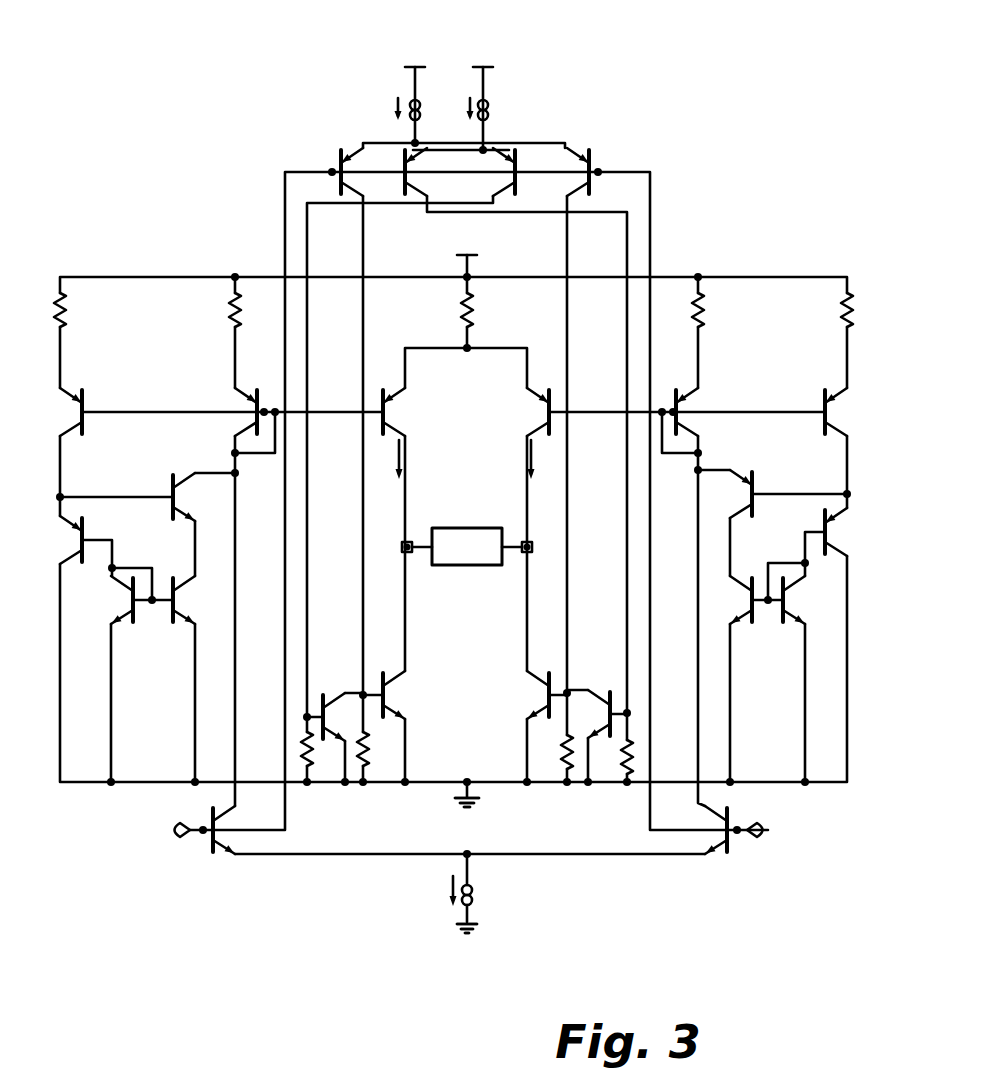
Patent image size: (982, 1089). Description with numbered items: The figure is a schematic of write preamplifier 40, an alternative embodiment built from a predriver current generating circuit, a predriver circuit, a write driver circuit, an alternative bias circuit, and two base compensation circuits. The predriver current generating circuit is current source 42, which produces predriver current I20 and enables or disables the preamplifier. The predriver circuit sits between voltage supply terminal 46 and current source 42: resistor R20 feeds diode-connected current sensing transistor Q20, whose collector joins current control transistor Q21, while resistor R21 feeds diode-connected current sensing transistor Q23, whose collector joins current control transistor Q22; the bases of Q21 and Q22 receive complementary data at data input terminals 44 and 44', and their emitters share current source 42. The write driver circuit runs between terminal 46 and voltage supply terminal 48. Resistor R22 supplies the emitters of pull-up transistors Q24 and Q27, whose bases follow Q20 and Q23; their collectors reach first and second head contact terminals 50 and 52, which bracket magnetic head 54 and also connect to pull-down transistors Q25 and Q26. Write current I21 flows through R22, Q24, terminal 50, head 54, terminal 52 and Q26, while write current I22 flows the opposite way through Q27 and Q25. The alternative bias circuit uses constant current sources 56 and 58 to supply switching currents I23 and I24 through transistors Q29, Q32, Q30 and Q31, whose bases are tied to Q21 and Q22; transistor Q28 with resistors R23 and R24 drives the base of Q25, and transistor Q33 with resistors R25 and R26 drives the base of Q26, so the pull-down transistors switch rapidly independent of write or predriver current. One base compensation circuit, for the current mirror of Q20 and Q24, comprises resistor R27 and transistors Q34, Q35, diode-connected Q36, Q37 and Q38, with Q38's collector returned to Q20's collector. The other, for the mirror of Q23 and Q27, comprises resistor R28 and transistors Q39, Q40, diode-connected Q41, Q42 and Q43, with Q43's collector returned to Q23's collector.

The write preamplifier 40 is at (176, 147).
The current source 42 is at (478, 905).
The data input terminal 44 is at (160, 818).
The data input terminal 44' is at (782, 822).
The voltage supply terminal 46 is at (483, 67).
The voltage supply terminal 48 is at (460, 921).
The first head contact terminal 50 is at (405, 541).
The second head contact terminal 52 is at (530, 554).
The magnetic head 54 is at (502, 528).
The current source 56 is at (410, 100).
The current source 58 is at (488, 100).
The predriver current I20 is at (485, 890).
The write current I21 is at (380, 458).
The write current I22 is at (549, 458).
The switching current I23 is at (379, 112).
The switching current I24 is at (451, 112).
The current sensing transistor Q20 is at (258, 396).
The current control transistor Q21 is at (215, 856).
The current control transistor Q22 is at (730, 855).
The current sensing transistor Q23 is at (714, 404).
The pull-up transistor Q24 is at (416, 412).
The pull-down transistor Q25 is at (417, 695).
The pull-down transistor Q26 is at (511, 695).
The pull-up transistor Q27 is at (516, 412).
The transistor Q28 is at (335, 698).
The transistor Q29 is at (323, 162).
The transistor Q30 is at (432, 172).
The transistor Q31 is at (487, 172).
The transistor Q32 is at (604, 169).
The transistor Q33 is at (600, 695).
The transistor Q34 is at (97, 416).
The transistor Q35 is at (51, 540).
The transistor Q36 is at (98, 600).
The transistor Q37 is at (204, 600).
The transistor Q38 is at (202, 497).
The transistor Q39 is at (815, 394).
The transistor Q40 is at (856, 532).
The transistor Q41 is at (815, 598).
The transistor Q42 is at (720, 600).
The transistor Q43 is at (770, 488).
The resistor R20 is at (207, 310).
The resistor R21 is at (724, 309).
The resistor R22 is at (493, 310).
The resistor R23 is at (328, 752).
The resistor R24 is at (386, 748).
The resistor R25 is at (545, 751).
The resistor R26 is at (631, 748).
The resistor R27 is at (86, 310).
The resistor R28 is at (819, 309).